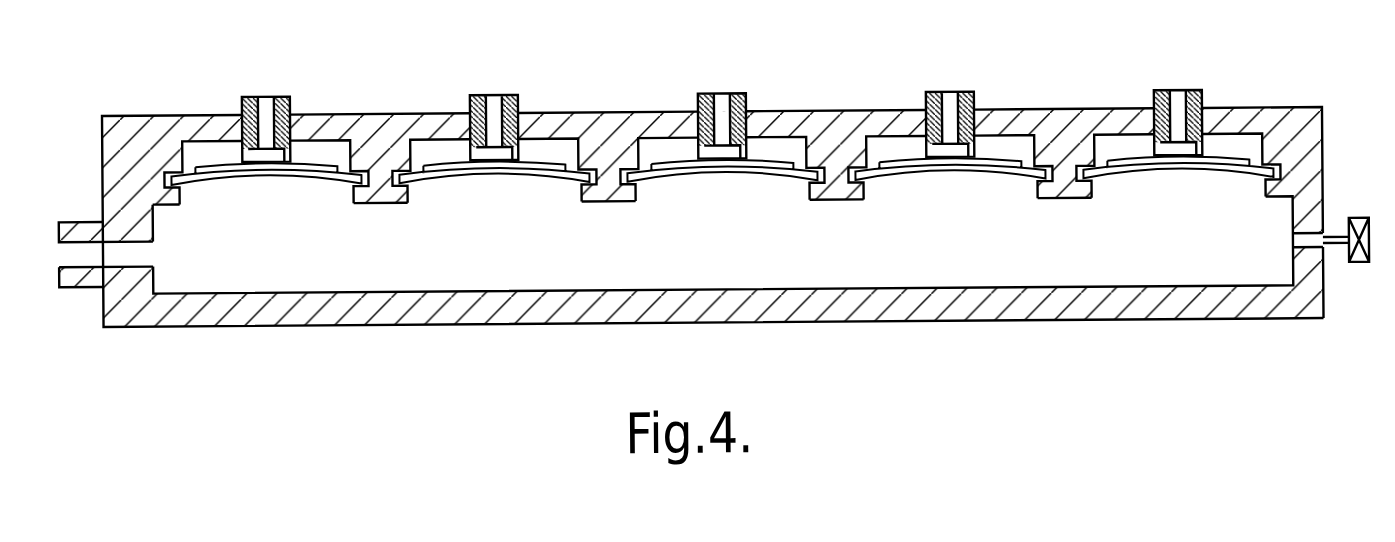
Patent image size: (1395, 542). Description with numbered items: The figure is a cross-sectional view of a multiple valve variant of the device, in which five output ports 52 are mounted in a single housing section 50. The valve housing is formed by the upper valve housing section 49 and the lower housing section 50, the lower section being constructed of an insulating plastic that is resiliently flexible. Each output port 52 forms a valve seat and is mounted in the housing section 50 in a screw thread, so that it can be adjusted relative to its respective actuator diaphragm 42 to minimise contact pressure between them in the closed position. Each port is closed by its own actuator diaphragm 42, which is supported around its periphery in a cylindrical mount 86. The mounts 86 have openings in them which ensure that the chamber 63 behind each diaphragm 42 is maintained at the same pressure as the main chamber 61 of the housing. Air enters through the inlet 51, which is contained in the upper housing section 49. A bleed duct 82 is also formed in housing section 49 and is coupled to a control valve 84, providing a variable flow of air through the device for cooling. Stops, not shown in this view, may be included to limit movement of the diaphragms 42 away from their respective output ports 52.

The actuator diaphragm 42 is at (259, 178).
The upper valve housing section 49 is at (1310, 284).
The lower valve housing section 50 is at (1323, 132).
The inlet 51 is at (67, 255).
The output port 52 is at (271, 98).
The main chamber 61 is at (1108, 270).
The chamber 63 is at (322, 149).
The bleed duct 82 is at (1327, 241).
The control valve 84 is at (1358, 227).
The cylindrical mount 86 is at (380, 206).